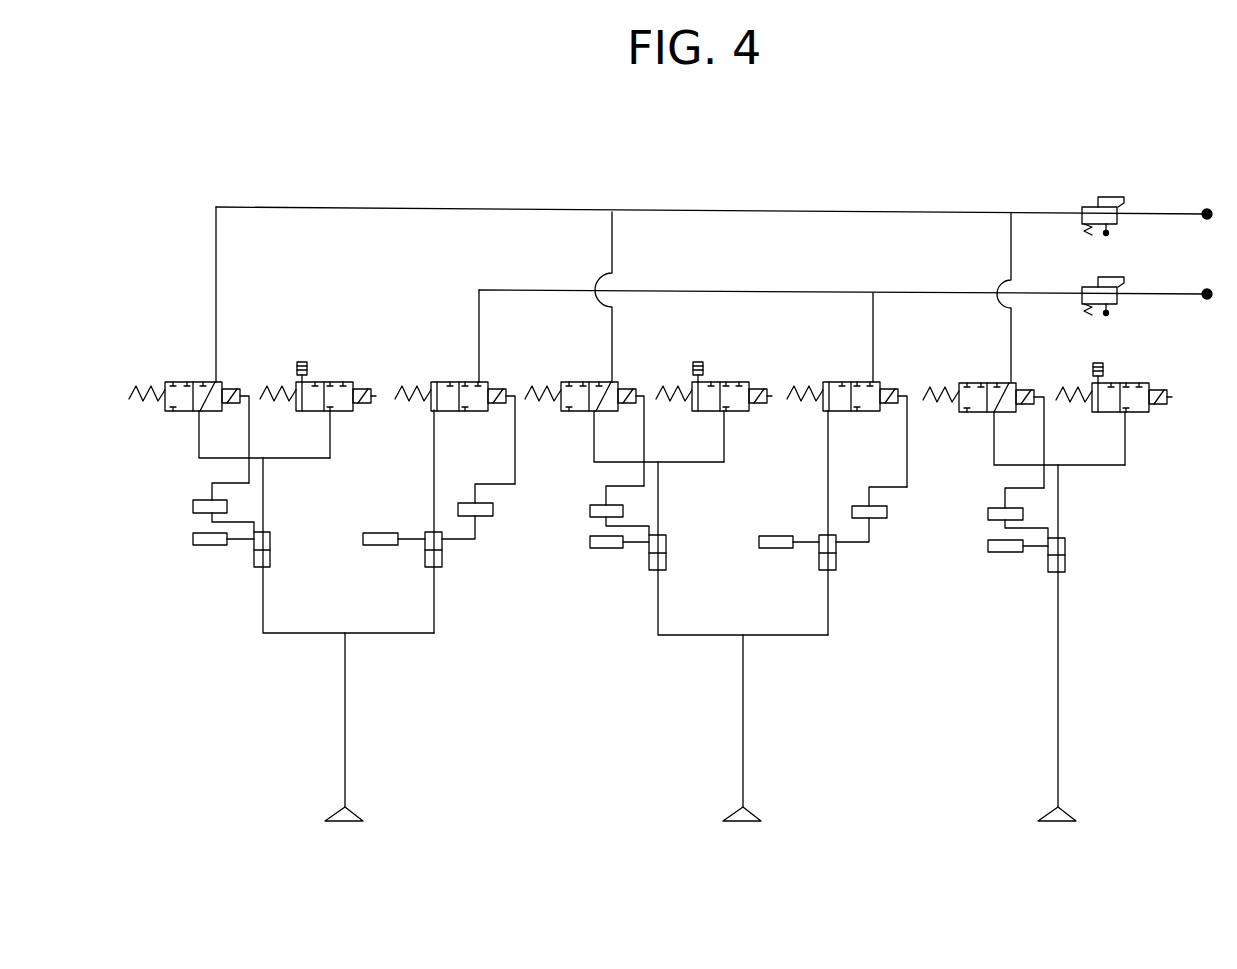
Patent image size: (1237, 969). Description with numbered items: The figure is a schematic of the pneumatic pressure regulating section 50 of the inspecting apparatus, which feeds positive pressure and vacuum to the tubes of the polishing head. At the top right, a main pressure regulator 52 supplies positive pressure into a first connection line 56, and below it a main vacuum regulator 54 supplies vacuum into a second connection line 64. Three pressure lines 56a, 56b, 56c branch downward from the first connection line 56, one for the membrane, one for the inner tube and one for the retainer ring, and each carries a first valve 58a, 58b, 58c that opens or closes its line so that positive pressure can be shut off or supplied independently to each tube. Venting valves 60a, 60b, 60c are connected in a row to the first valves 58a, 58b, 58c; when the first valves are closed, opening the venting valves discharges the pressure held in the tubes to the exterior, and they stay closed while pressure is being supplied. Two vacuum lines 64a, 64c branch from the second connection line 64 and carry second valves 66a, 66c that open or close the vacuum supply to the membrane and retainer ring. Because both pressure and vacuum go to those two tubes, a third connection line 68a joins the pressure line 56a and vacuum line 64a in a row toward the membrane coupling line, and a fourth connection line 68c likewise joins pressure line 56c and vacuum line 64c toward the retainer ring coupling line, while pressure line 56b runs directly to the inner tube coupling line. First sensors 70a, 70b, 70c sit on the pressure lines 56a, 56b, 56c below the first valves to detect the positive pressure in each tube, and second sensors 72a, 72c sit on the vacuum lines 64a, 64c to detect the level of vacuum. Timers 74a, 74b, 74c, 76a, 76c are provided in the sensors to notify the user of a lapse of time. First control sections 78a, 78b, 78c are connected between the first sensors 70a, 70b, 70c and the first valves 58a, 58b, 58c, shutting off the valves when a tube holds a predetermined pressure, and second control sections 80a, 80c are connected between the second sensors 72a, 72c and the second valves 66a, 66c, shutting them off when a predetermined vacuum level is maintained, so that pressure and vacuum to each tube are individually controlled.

The pneumatic control system 50 is at (190, 114).
The main pressure regulator 52 is at (1113, 196).
The main vacuum regulator 54 is at (1132, 307).
The first connection line 56 is at (723, 212).
The pressure line 56a is at (612, 240).
The pressure line 56b is at (1011, 238).
The pressure line 56c is at (216, 240).
The first valve 58a is at (570, 413).
The first valve 58b is at (968, 414).
The first valve 58c is at (168, 380).
The venting valve 60a is at (745, 412).
The venting valve 60b is at (1146, 414).
The venting valve 60c is at (348, 412).
The second connection line 64 is at (840, 292).
The vacuum line 64a is at (873, 332).
The vacuum line 64c is at (479, 332).
The second valve 66a is at (876, 412).
The second valve 66c is at (463, 412).
The third connection line 68a is at (743, 722).
The fourth connection line 68c is at (345, 735).
The first sensor 70a is at (650, 568).
The first sensor 70b is at (1066, 570).
The first sensor 70c is at (272, 567).
The second sensor 72a is at (818, 568).
The second sensor 72c is at (423, 567).
The timer 74a is at (590, 542).
The timer 74b is at (988, 546).
The timer 74c is at (193, 541).
The timer 76a is at (759, 542).
The timer 76c is at (363, 540).
The first control section 78a is at (590, 511).
The first control section 78b is at (988, 512).
The first control section 78c is at (193, 505).
The second control section 80a is at (872, 520).
The second control section 80c is at (490, 518).